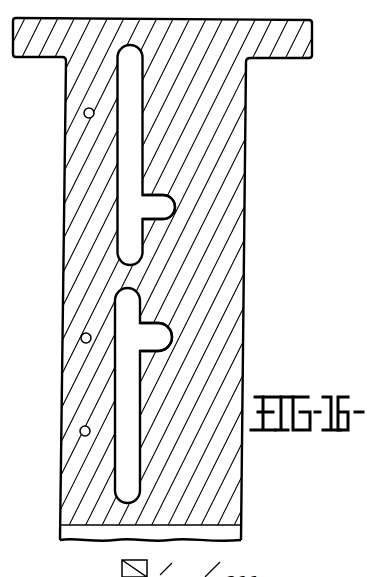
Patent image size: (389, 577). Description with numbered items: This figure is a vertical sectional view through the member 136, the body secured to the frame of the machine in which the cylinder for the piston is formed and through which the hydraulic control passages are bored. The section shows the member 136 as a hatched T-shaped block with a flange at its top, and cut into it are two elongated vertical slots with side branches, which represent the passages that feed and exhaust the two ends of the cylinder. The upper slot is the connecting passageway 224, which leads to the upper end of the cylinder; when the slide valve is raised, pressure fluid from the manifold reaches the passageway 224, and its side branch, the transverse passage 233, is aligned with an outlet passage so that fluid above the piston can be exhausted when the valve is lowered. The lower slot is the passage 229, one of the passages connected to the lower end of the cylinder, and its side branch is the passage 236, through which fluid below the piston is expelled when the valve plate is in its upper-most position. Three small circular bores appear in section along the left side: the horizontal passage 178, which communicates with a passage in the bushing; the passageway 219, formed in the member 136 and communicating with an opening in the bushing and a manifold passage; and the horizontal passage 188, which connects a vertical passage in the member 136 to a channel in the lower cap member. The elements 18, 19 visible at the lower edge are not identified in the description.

The member 136 is at (243, 137).
The horizontal passage 178 is at (84, 115).
The connecting passageway 224 is at (125, 151).
The transverse passage 233 is at (167, 210).
The passageway 219 is at (80, 338).
The passage 229 is at (125, 367).
The passage 236 is at (167, 335).
The horizontal passage 188 is at (80, 432).
The element 18 is at (180, 564).
The element 19 is at (227, 563).